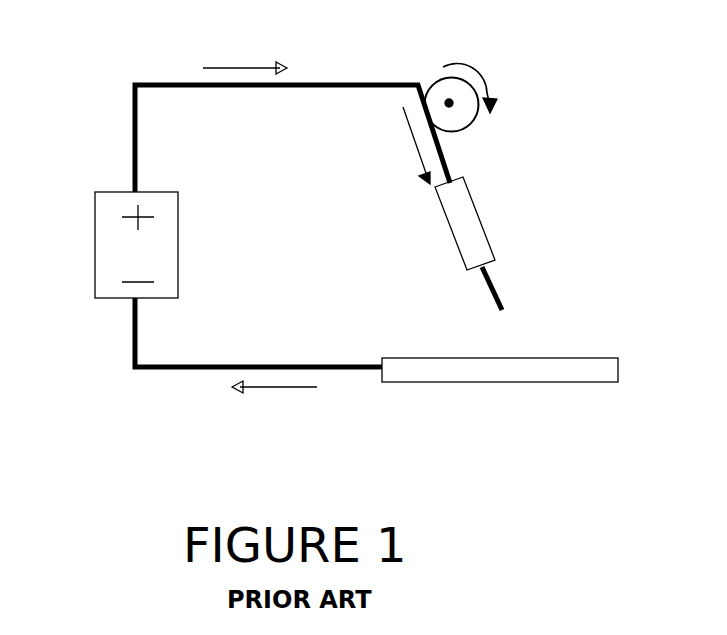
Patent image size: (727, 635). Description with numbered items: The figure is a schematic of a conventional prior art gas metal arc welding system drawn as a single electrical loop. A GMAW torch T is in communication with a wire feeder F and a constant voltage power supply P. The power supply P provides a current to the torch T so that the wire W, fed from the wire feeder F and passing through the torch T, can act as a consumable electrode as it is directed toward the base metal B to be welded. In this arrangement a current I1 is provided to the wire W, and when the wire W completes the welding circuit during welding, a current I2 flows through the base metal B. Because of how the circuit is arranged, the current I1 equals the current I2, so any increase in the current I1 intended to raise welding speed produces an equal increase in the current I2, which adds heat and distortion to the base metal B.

The constant voltage power supply P is at (107, 242).
The wire feeder F is at (445, 95).
The wire W is at (450, 163).
The GMAW torch T is at (472, 216).
The base metal B is at (543, 373).
The current I1 is at (245, 52).
The current I2 is at (274, 401).